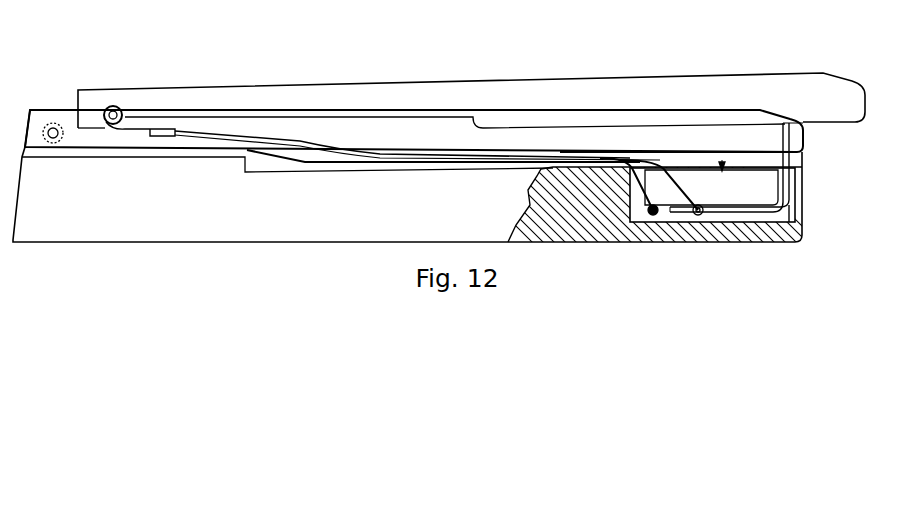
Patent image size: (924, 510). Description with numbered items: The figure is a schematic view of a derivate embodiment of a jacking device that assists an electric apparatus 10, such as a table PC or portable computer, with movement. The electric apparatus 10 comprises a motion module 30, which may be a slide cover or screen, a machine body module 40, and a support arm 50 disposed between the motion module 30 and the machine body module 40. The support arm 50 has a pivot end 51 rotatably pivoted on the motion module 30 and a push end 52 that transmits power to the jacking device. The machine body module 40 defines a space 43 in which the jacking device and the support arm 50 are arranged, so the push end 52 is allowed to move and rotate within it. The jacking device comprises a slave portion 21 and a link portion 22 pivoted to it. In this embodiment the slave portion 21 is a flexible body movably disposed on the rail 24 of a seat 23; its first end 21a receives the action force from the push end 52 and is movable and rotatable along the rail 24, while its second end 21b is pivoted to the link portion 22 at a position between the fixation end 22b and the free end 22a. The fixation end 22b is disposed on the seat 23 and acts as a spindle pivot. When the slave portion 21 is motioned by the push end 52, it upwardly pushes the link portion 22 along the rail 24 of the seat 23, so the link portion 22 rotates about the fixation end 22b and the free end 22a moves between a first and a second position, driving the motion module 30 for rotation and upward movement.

The electric apparatus 10 is at (278, 80).
The motion module 30 is at (136, 137).
The pivot end 51 is at (50, 122).
The machine body module 40 is at (210, 243).
The support arm 50 is at (385, 145).
The space 43 is at (722, 165).
The push end 52 is at (678, 143).
The link portion 22 is at (797, 185).
The free end 22a is at (795, 160).
The fixation end 22b is at (797, 200).
The slave portion 21 is at (760, 243).
The first end 21a is at (680, 243).
The second end 21b is at (795, 215).
The seat 23 is at (713, 243).
The rail 24 is at (740, 243).